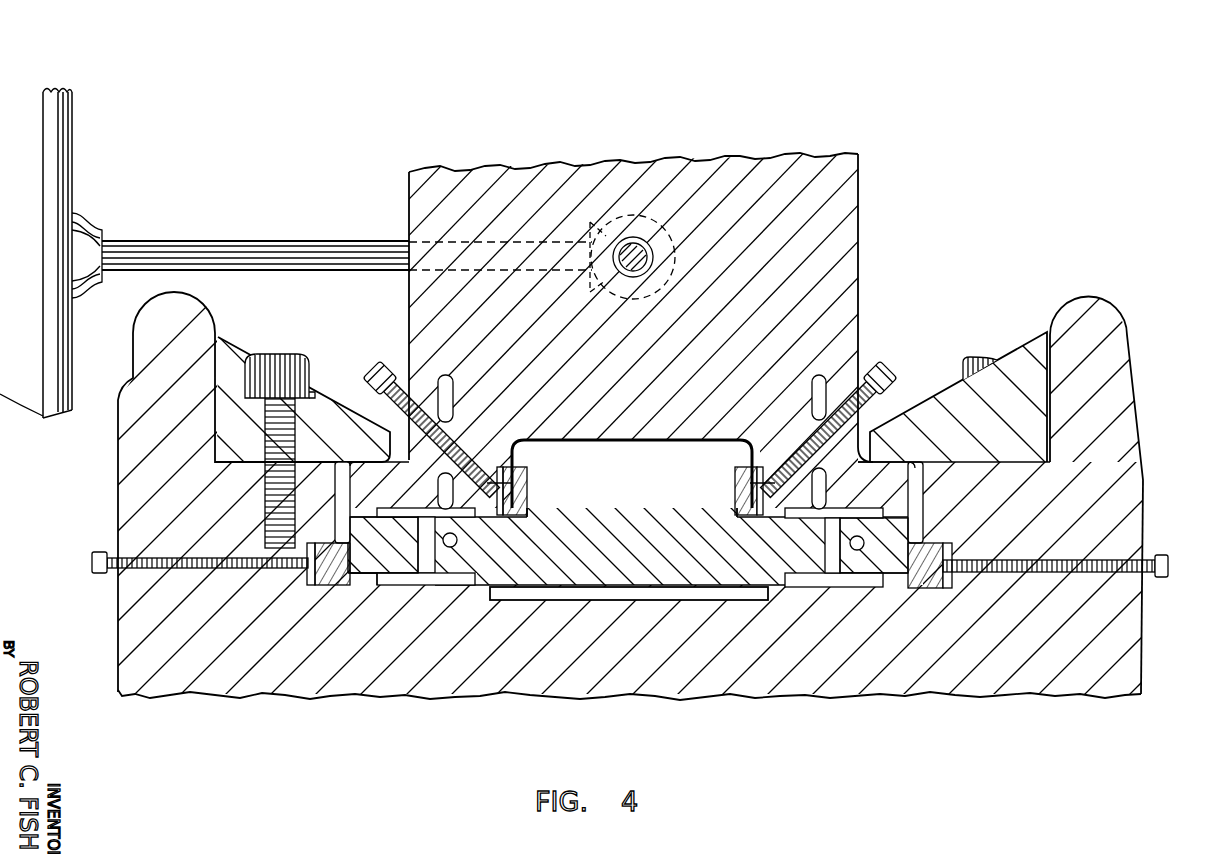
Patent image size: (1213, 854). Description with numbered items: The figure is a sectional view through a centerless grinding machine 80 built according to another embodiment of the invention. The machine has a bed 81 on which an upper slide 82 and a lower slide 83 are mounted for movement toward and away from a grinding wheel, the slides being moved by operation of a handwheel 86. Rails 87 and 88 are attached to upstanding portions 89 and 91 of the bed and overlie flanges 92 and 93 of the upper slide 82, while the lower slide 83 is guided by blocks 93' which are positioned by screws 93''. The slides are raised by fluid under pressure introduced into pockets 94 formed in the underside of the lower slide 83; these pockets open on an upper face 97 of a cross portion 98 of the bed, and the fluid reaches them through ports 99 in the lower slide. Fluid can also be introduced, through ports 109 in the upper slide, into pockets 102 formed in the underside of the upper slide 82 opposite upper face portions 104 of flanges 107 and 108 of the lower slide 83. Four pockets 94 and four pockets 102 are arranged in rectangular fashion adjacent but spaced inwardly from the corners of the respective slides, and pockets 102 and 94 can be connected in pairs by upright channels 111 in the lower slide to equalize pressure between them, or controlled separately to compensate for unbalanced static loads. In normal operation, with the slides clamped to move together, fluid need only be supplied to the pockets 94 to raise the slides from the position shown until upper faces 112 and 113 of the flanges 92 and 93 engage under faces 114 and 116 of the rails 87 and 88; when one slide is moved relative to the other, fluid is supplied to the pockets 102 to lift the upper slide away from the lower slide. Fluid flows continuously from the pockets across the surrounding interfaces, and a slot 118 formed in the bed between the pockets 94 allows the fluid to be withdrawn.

The centerless grinding machine 80 is at (1182, 461).
The bed 81 is at (845, 688).
The upper slide 82 is at (845, 282).
The lower slide 83 is at (738, 556).
The handwheel 86 is at (50, 246).
The rail 87 is at (320, 407).
The rail 88 is at (957, 390).
The upstanding portion 89 is at (133, 380).
The upstanding portion 91 is at (1102, 323).
The flange 92 is at (355, 492).
The flange 93 is at (948, 502).
The block 93' is at (625, 590).
The screw 93'' is at (621, 584).
The pocket 94 is at (470, 582).
The upper face 97 is at (400, 576).
The cross portion 98 is at (635, 690).
The port 99 is at (458, 541).
The pocket 102 is at (400, 517).
The upper face portion 104 is at (413, 508).
The flange 107 is at (362, 563).
The flange 108 is at (920, 541).
The port 109 is at (450, 373).
The upright channel 111 is at (835, 570).
The upper face 112 is at (355, 462).
The upper face 113 is at (880, 463).
The under face 114 is at (352, 453).
The under face 116 is at (923, 475).
The slot 118 is at (603, 590).